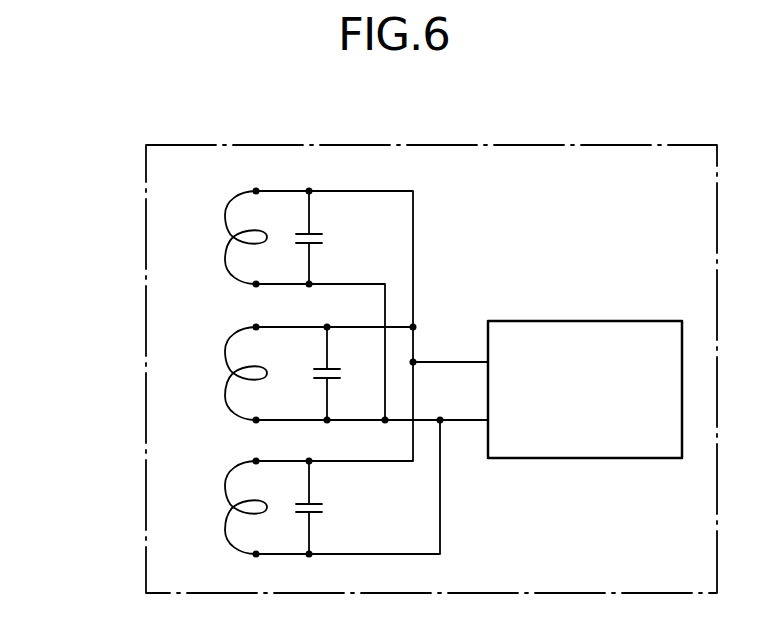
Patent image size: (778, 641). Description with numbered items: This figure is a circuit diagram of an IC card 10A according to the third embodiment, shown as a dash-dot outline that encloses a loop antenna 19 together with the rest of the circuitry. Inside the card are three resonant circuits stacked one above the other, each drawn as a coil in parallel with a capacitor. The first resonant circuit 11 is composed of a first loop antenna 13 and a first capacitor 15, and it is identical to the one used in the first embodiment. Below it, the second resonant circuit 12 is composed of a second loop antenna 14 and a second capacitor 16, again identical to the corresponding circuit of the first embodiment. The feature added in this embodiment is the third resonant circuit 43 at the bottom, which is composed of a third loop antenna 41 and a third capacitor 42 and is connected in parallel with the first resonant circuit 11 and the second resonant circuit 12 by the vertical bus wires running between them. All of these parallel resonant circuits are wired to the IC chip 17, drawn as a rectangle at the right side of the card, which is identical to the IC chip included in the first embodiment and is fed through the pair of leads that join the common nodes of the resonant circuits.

The IC card 10A is at (575, 147).
The first resonant circuit 11 is at (435, 229).
The second resonant circuit 12 is at (295, 368).
The first loop antenna 13 is at (227, 208).
The second loop antenna 14 is at (228, 338).
The first capacitor 15 is at (326, 237).
The second capacitor 16 is at (343, 373).
The IC chip 17 is at (597, 321).
The loop antenna 19 is at (237, 233).
The third loop antenna 41 is at (228, 474).
The third capacitor 42 is at (326, 507).
The third resonant circuit 43 is at (360, 489).